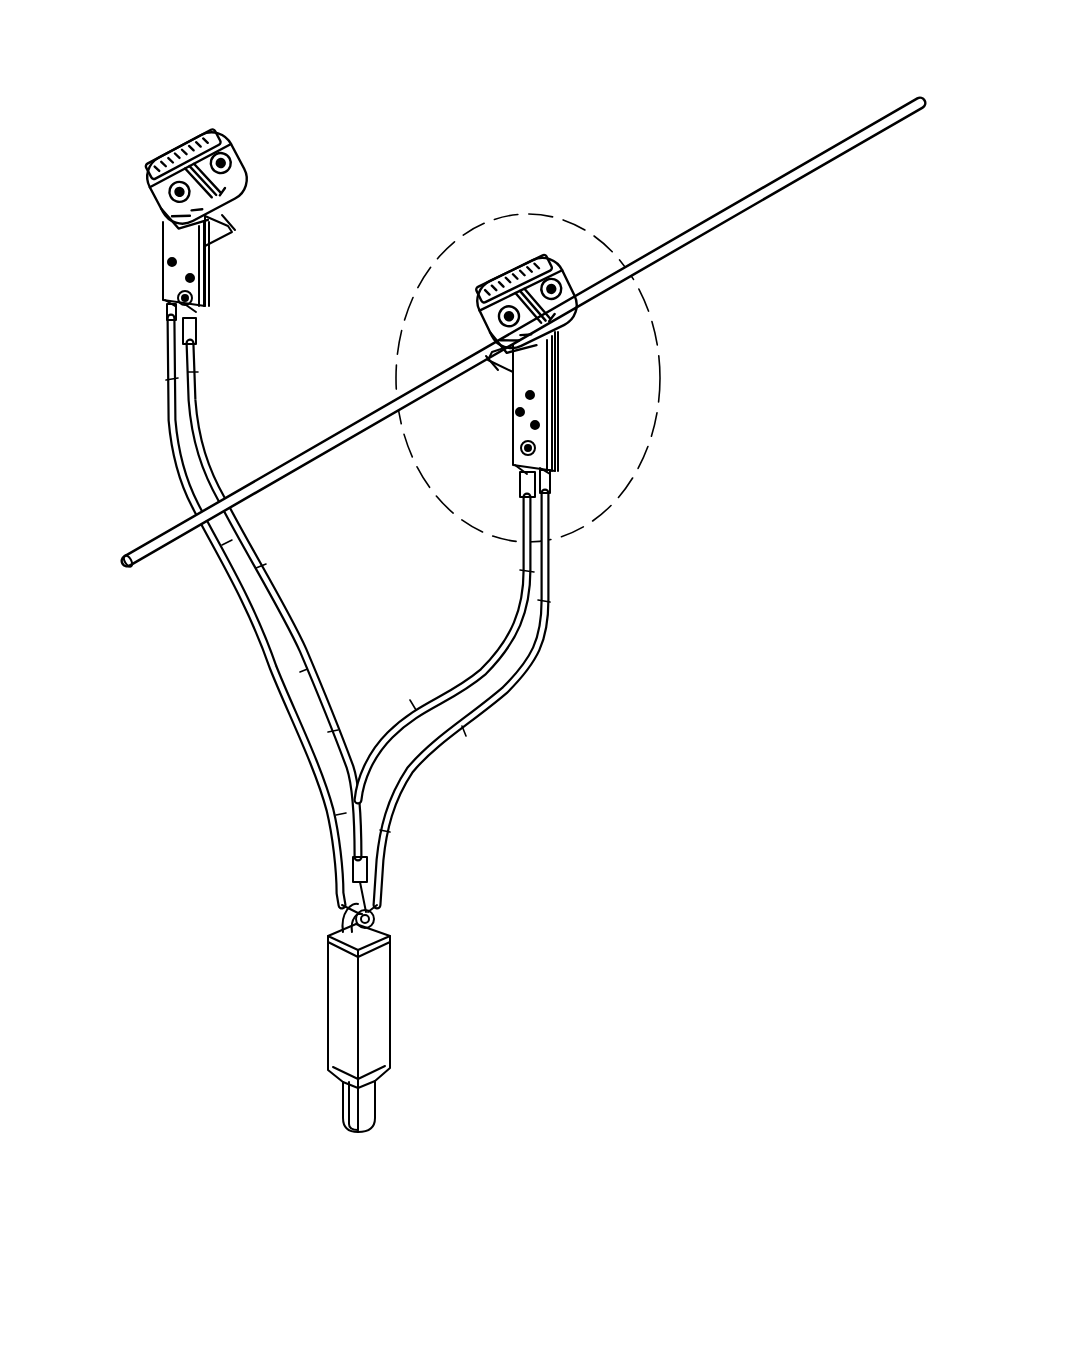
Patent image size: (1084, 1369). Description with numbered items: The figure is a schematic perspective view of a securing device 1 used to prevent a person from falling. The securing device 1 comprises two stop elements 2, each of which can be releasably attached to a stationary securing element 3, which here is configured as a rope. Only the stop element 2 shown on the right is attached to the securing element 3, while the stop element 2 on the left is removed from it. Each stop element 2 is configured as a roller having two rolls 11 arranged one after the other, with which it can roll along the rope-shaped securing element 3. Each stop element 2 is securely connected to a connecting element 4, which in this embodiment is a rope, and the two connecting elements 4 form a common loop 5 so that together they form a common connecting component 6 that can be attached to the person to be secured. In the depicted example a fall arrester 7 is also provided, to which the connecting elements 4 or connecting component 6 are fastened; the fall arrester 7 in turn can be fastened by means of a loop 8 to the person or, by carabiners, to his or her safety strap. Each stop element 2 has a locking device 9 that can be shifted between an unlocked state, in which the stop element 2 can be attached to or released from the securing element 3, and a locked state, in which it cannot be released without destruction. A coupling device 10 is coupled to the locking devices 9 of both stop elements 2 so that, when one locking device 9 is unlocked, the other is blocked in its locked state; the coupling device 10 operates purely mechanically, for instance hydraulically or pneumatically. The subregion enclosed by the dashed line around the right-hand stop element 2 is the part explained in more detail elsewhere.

The securing device 1 is at (480, 134).
The stop element 2 is at (212, 278).
The securing element 3 is at (745, 216).
The connecting element 4 is at (262, 572).
The loop 5 is at (364, 902).
The connecting component 6 is at (324, 657).
The fall arrester 7 is at (398, 1003).
The loop 8 is at (340, 1108).
The locking device 9 is at (232, 230).
The coupling device 10 is at (410, 778).
The roll 11 is at (234, 138).